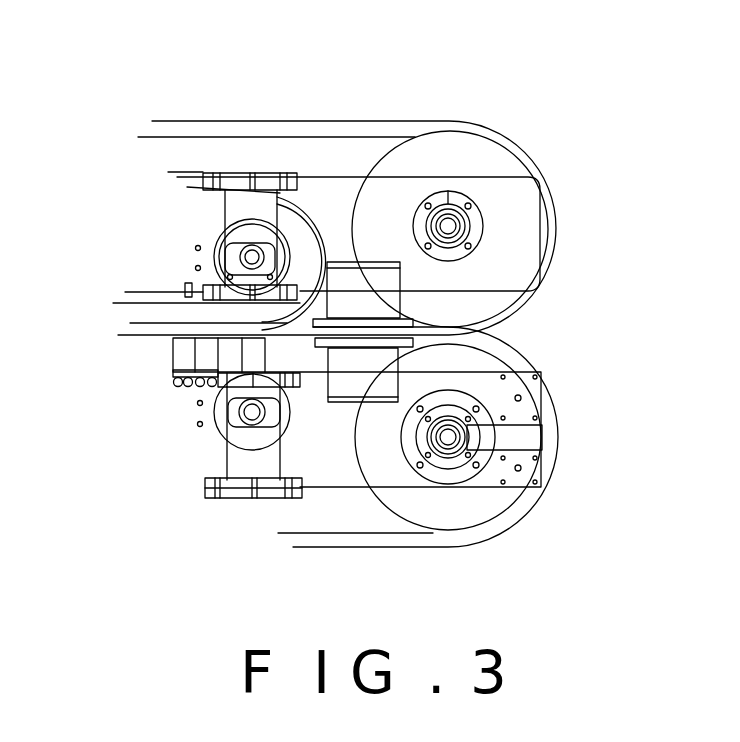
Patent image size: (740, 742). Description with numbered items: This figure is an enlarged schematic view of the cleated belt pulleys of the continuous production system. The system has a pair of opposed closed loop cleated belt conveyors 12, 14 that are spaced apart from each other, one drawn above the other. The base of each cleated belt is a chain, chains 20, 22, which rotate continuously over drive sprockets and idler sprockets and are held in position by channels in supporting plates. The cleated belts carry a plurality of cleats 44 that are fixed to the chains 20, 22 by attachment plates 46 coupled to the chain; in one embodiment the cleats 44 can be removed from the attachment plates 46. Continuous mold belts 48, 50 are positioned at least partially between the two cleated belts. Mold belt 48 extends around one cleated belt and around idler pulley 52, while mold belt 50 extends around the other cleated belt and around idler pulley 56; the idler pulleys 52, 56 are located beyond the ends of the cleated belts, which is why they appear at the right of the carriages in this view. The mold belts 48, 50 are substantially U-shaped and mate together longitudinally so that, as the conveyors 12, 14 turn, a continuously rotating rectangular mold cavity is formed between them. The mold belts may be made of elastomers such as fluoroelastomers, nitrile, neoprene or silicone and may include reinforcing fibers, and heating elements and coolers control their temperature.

The cleated belt conveyor 12 is at (318, 158).
The cleated belt conveyor 14 is at (325, 513).
The chain 20 is at (180, 390).
The chain 22 is at (187, 283).
The cleats 44 is at (173, 356).
The attachment plates 46 is at (173, 377).
The continuous mold belt 48 is at (360, 534).
The continuous mold belt 50 is at (410, 125).
The idler pulley 52 is at (490, 358).
The idler pulley 56 is at (488, 162).